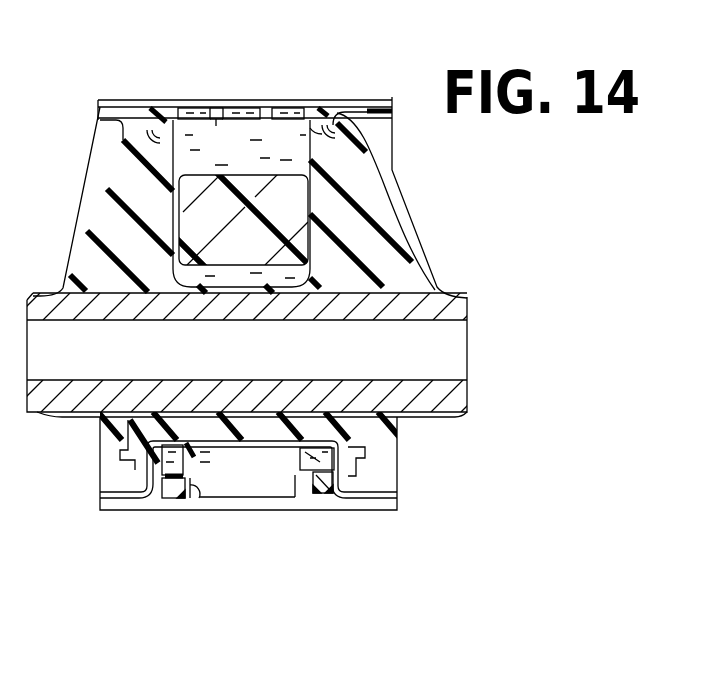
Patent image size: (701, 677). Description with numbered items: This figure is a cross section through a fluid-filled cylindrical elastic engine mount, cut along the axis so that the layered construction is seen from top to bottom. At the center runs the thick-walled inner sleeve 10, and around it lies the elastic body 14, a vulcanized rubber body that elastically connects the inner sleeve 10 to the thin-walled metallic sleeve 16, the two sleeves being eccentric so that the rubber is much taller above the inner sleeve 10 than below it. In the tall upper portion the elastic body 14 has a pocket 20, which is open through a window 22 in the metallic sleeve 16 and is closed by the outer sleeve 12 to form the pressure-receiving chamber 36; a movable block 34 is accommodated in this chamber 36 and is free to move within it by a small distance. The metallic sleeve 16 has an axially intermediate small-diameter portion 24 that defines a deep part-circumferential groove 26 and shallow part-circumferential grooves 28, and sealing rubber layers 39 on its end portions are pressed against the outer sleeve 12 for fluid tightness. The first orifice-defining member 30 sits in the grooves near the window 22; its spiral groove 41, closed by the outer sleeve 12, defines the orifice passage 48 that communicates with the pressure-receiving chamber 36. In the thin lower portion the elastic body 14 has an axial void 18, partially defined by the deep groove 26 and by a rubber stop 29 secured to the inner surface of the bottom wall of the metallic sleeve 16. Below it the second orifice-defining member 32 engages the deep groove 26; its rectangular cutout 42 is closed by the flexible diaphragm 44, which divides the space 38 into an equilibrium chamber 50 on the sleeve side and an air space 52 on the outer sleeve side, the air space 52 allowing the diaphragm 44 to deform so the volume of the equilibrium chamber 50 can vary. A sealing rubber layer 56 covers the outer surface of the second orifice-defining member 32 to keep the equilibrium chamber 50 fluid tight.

The inner sleeve 10 is at (455, 305).
The outer sleeve 12 is at (377, 510).
The elastic body 14 is at (113, 230).
The metallic sleeve 16 is at (355, 473).
The axial void 18 is at (120, 438).
The pocket 20 is at (303, 160).
The window 22 is at (292, 108).
The small-diameter portion 24 is at (164, 112).
The deep part-circumferential groove 26 is at (220, 446).
The shallow part-circumferential grooves 28 is at (320, 113).
The rubber stop 29 is at (313, 425).
The first orifice-defining member 30 is at (216, 110).
The second orifice-defining member 32 is at (315, 482).
The movable block 34 is at (178, 212).
The pressure-receiving chamber 36 is at (188, 145).
The space 38 is at (343, 577).
The sealing rubber layers 39 is at (115, 107).
The spiral groove 41 is at (253, 108).
The rectangular cutout 42 is at (200, 483).
The flexible diaphragm 44 is at (253, 450).
The orifice passage 48 is at (187, 107).
The equilibrium chamber 50 is at (295, 460).
The air space 52 is at (265, 490).
The sealing rubber layer 56 is at (168, 502).